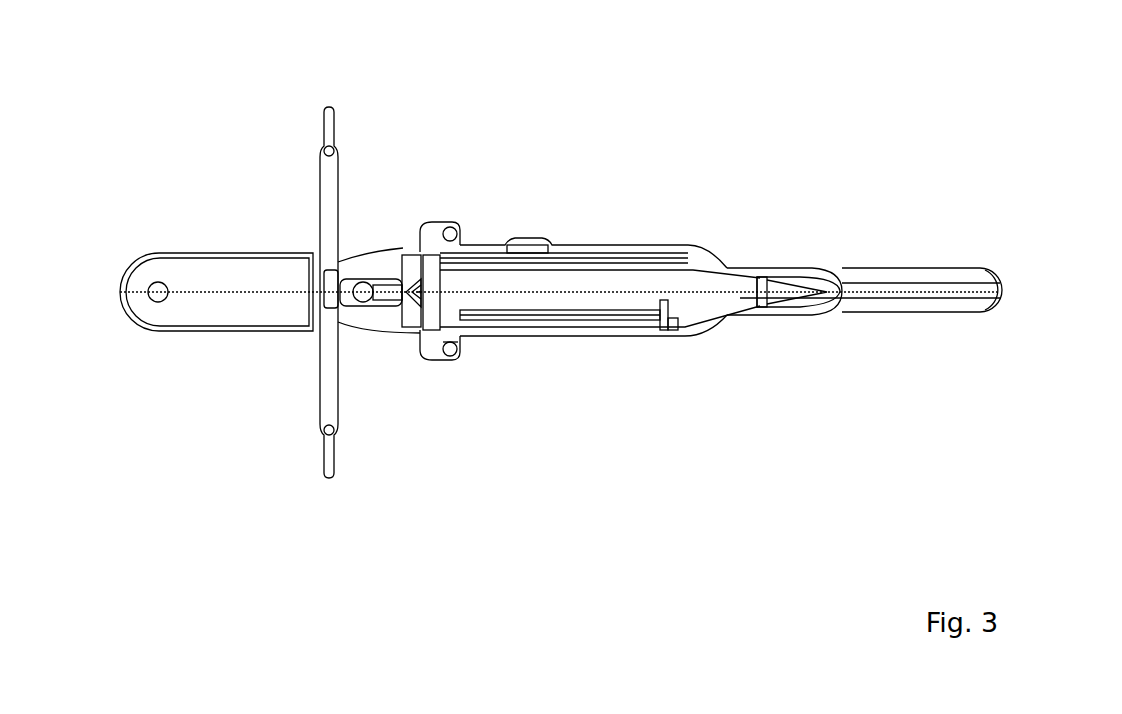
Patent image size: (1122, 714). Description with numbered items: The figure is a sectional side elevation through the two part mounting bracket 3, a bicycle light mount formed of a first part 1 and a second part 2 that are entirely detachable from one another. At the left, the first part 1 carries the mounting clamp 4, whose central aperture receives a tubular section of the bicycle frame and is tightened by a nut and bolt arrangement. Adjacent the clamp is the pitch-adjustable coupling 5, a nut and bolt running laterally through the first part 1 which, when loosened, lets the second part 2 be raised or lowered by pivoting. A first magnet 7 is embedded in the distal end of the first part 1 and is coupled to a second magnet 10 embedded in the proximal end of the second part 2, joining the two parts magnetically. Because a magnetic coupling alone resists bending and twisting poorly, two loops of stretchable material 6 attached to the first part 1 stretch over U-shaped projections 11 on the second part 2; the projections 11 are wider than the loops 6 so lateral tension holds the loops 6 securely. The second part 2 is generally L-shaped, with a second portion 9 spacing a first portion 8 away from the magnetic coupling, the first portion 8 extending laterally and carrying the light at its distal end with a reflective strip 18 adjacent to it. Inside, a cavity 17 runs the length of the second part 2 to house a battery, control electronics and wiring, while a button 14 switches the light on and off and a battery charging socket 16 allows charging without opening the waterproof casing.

The first part 1 is at (230, 130).
The second part 2 is at (795, 100).
The two part mounting bracket 3 is at (463, 520).
The mounting clamp 4 is at (225, 298).
The pitch-adjustable coupling 5 is at (363, 295).
The loops of stretchable material 6 is at (332, 143).
The first magnet 7 is at (415, 255).
The first portion 8 is at (983, 275).
The second portion 9 is at (727, 292).
The second magnet 10 is at (437, 257).
The projections 11 is at (450, 355).
The button 14 is at (522, 250).
The battery charging socket 16 is at (515, 338).
The cavity 17 is at (575, 292).
The reflective strip 18 is at (1003, 288).